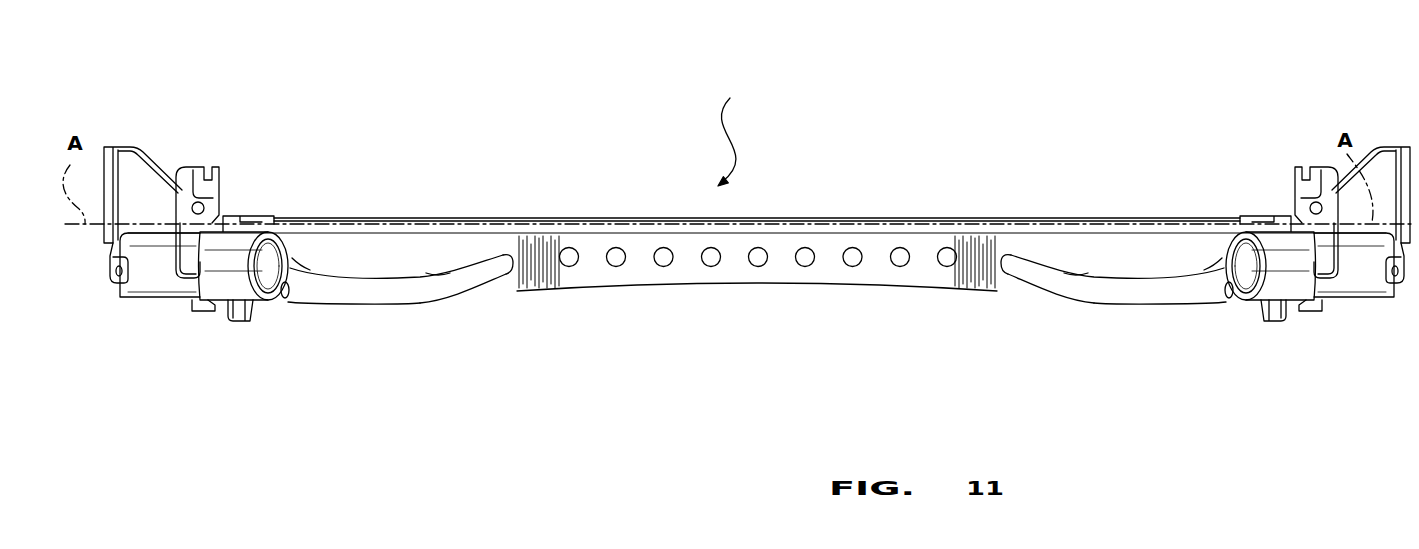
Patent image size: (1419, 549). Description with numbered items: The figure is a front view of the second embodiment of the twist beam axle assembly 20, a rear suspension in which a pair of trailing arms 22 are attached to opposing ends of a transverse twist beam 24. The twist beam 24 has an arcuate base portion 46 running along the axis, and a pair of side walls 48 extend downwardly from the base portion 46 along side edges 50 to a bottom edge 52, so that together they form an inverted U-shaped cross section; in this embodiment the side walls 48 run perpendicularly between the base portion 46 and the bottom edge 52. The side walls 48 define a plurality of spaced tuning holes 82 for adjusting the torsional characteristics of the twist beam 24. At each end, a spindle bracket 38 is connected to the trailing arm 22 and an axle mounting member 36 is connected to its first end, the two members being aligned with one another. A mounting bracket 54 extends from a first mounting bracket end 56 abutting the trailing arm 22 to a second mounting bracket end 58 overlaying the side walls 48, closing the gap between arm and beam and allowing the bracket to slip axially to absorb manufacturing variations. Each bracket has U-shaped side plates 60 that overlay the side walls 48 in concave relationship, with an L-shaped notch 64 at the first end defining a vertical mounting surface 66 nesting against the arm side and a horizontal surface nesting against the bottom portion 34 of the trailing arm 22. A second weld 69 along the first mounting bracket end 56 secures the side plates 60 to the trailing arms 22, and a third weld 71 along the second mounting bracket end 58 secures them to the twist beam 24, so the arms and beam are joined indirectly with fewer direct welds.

The twist beam axle assembly 20 is at (740, 131).
The trailing arm 22 is at (131, 297).
The twist beam 24 is at (1128, 218).
The bottom portion 34 is at (150, 300).
The axle mounting member 36 is at (242, 300).
The spindle bracket 38 is at (110, 147).
The base portion 46 is at (893, 218).
The side wall 48 is at (553, 280).
The side edge 50 is at (278, 243).
The bottom edge 52 is at (652, 291).
The mounting bracket 54 is at (378, 303).
The first mounting bracket end 56 is at (266, 305).
The second mounting bracket end 58 is at (480, 275).
The side plate 60 is at (382, 300).
The notch 64 is at (292, 257).
The vertical mounting surface 66 is at (282, 300).
The second weld 69 is at (312, 270).
The third weld 71 is at (428, 272).
The tuning holes 82 is at (712, 264).